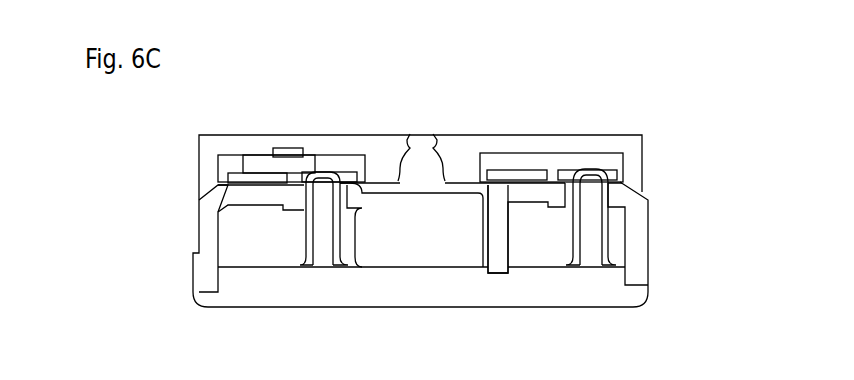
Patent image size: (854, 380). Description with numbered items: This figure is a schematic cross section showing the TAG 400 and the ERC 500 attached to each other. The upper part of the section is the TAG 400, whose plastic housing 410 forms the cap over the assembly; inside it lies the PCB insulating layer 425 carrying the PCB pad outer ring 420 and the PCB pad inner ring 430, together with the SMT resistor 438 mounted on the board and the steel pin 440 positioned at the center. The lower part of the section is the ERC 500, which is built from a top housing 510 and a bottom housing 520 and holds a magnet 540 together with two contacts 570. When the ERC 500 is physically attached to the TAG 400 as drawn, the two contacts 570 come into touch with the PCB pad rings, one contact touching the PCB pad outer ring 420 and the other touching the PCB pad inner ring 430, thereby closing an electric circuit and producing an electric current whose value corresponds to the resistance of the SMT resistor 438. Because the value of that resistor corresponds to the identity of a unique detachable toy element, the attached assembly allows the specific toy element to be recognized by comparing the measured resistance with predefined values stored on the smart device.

The TAG 400 is at (143, 133).
The plastic housing 410 is at (613, 142).
The PCB pad outer ring 420 is at (235, 173).
The PCB insulating layer 425 is at (595, 163).
The PCB pad inner ring 430 is at (347, 172).
The SMT resistor 438 is at (290, 148).
The steel pin 440 is at (422, 151).
The ERC 500 is at (143, 219).
The top housing 510 is at (207, 270).
The bottom housing 520 is at (548, 283).
The magnet 540 is at (423, 257).
The contacts 570 is at (313, 265).